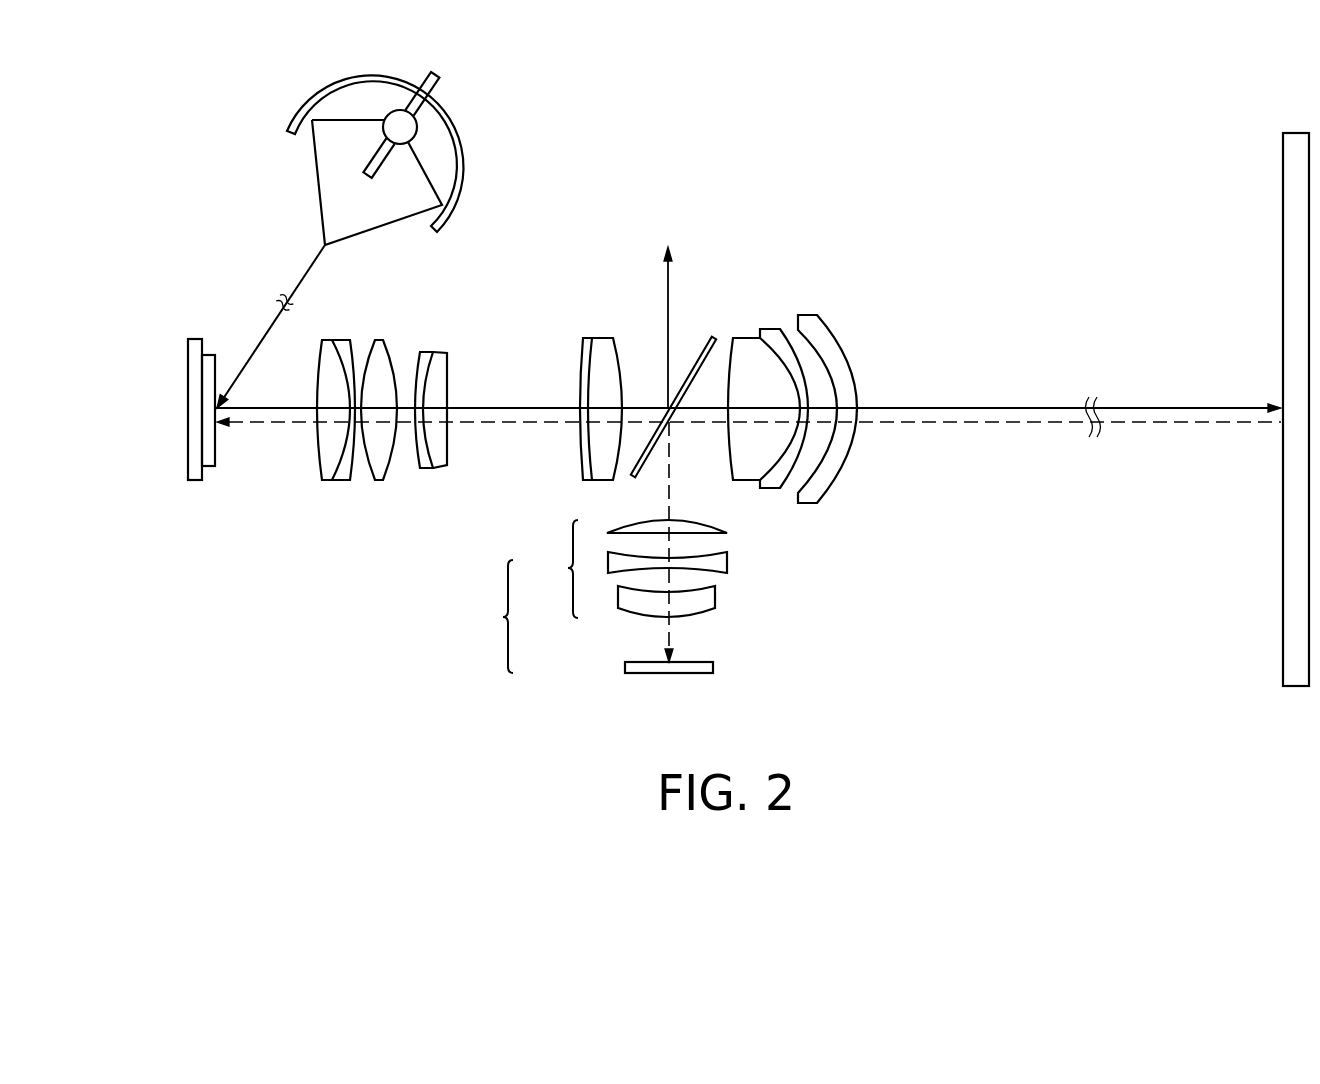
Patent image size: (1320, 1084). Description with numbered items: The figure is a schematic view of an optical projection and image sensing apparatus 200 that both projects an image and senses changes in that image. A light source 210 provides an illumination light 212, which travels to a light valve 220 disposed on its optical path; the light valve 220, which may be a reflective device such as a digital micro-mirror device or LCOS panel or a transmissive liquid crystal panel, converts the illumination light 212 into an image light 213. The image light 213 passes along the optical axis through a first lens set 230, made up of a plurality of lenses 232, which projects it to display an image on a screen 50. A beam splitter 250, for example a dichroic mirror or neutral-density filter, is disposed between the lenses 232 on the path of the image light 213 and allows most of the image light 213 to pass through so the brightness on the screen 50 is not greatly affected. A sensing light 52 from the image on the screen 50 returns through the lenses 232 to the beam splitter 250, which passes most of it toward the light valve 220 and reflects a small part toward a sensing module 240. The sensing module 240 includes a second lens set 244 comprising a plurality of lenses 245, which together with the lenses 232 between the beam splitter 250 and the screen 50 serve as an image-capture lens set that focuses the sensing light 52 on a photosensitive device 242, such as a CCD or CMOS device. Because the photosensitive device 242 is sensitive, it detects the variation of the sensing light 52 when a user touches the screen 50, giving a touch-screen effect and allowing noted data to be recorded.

The optical projection and image sensing apparatus 200 is at (1180, 709).
The light source 210 is at (318, 105).
The illumination light 212 is at (248, 358).
The light valve 220 is at (195, 405).
The image light 213 is at (297, 412).
The first lens set 230 is at (850, 316).
The lenses 232 is at (807, 327).
The beam splitter 250 is at (717, 337).
The sensing module 240 is at (631, 604).
The second lens set 244 is at (664, 569).
The lenses 245 is at (712, 562).
The photosensitive device 242 is at (628, 664).
The screen 50 is at (1294, 689).
The sensing light 52 is at (1173, 425).